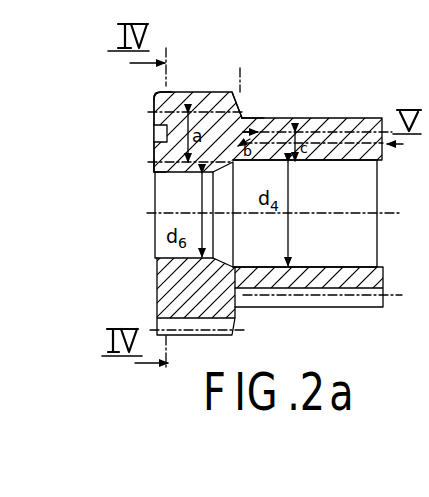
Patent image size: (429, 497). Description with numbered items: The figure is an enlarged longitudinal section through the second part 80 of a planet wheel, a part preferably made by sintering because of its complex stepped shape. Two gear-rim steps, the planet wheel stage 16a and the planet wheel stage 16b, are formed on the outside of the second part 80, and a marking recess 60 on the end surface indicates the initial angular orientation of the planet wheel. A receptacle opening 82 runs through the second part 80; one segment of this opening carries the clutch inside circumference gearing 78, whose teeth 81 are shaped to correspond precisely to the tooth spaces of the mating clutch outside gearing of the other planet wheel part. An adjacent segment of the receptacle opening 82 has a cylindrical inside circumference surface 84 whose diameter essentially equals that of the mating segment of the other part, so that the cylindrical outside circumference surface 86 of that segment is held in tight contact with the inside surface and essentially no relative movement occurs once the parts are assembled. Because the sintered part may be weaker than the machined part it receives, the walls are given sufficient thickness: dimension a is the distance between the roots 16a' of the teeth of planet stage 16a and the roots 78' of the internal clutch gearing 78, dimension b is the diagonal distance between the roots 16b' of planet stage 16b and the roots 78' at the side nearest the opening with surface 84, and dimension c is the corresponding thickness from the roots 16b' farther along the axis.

The planet wheel stage 16a is at (198, 108).
The planet wheel stage 16b is at (308, 189).
The roots of the gear teeth of planet stage 16a 16a' is at (107, 132).
The roots of the gear teeth of planet stage 16b 16b' is at (279, 110).
The marking recess 60 is at (153, 134).
The clutch inside circumference gearing 78 is at (166, 214).
The roots of the gear teeth of internal clutch gearing 78' is at (119, 166).
The second part of the planet wheel 80 is at (150, 100).
The teeth of the clutch inside circumference gearing 81 is at (157, 257).
The receptacle opening 82 is at (160, 232).
The cylindrical inside circumference surface 84 is at (344, 200).
The cylindrical outside circumference surface 86 is at (243, 92).